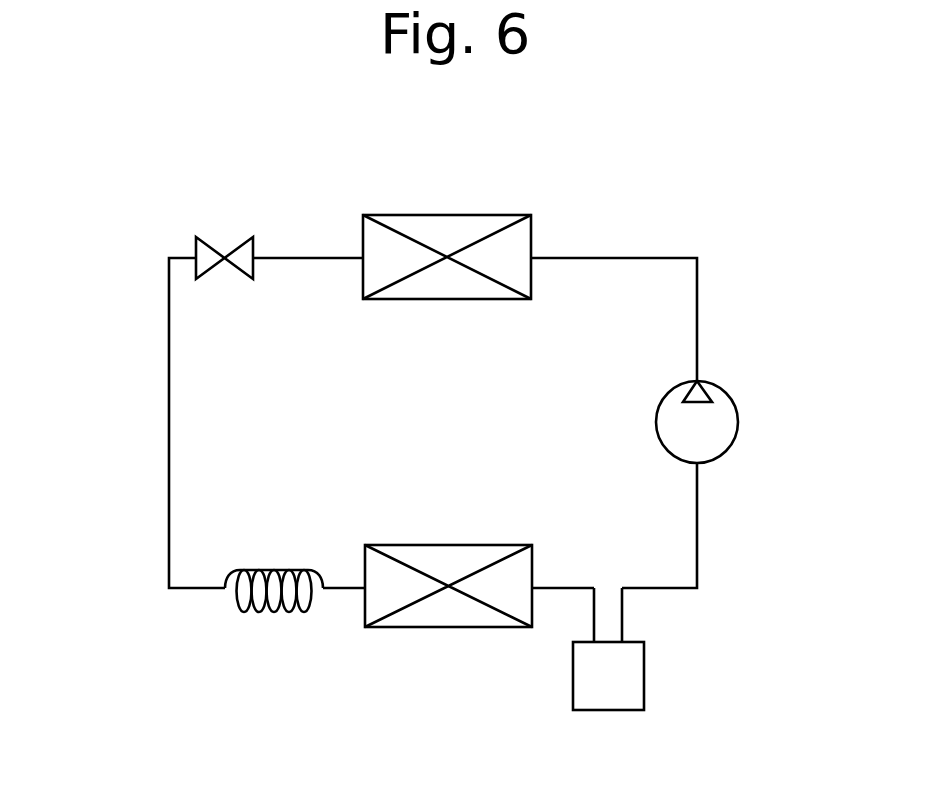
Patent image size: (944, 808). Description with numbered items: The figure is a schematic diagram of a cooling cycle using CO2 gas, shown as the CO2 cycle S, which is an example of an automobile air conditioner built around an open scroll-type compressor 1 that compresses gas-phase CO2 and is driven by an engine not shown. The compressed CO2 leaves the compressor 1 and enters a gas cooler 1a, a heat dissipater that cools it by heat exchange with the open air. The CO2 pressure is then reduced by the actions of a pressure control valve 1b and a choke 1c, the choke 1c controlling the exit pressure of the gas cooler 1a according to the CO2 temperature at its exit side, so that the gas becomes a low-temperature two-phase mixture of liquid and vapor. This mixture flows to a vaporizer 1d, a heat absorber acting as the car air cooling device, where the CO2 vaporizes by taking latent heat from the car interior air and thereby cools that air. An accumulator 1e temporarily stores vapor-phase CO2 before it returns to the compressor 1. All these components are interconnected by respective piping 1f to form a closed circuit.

The open scroll-type compressor 1 is at (730, 422).
The gas cooler 1a is at (450, 215).
The pressure control valve 1b is at (218, 245).
The choke 1c is at (275, 612).
The vaporizer 1d is at (449, 620).
The accumulator 1e is at (637, 677).
The piping 1f is at (697, 300).
The CO2 cycle S is at (437, 453).